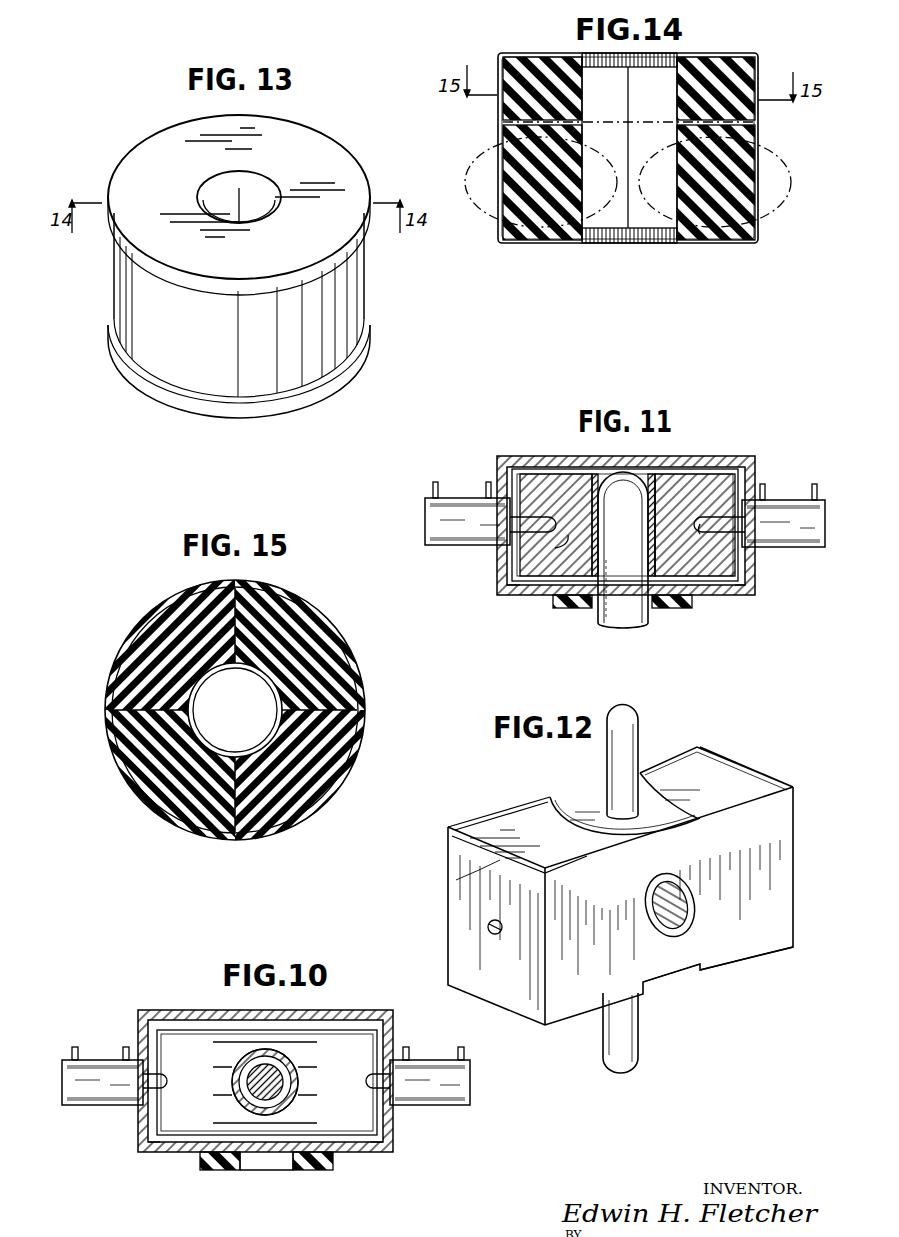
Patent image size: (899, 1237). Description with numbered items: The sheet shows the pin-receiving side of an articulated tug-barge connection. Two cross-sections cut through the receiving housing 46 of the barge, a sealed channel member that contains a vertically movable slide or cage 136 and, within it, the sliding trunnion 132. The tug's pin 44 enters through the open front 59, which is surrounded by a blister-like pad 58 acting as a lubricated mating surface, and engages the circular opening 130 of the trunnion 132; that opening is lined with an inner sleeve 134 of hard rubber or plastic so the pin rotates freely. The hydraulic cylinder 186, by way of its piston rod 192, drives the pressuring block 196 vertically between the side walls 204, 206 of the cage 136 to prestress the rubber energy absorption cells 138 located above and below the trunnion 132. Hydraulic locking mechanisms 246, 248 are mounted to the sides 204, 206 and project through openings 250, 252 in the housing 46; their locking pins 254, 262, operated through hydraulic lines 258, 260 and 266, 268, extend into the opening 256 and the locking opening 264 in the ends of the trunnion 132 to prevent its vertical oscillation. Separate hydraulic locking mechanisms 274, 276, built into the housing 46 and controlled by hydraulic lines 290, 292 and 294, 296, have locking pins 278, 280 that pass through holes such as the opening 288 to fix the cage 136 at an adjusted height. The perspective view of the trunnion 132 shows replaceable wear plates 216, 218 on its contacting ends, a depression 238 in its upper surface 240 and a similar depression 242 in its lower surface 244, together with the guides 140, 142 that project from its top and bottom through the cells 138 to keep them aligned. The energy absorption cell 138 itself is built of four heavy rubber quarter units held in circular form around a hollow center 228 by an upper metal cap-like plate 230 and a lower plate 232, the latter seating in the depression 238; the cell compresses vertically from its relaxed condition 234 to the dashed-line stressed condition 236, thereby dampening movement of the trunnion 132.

In FIG. 11, the pin 44 is at (603, 612).
In FIG. 11, the receiving housing 46 is at (725, 457).
In FIG. 10, the receiving housing 46 is at (185, 1010).
In FIG. 11, the blister-like pad 58 is at (670, 609).
In FIG. 10, the blister-like pad 58 is at (215, 1172).
In FIG. 10, the open front 59 is at (268, 1155).
In FIG. 11, the circular opening 130 is at (597, 470).
In FIG. 12, the circular opening 130 is at (688, 915).
In FIG. 11, the trunnion 132 is at (672, 478).
In FIG. 12, the trunnion 132 is at (713, 772).
In FIG. 11, the inner sleeve 134 is at (654, 509).
In FIG. 12, the inner sleeve 134 is at (655, 905).
In FIG. 11, the slide or cage 136 is at (530, 468).
In FIG. 13, the rubber energy absorption cell 138 is at (125, 297).
In FIG. 14, the rubber energy absorption cell 138 is at (503, 112).
In FIG. 15, the rubber energy absorption cell 138 is at (128, 640).
In FIG. 12, the guide 140 is at (640, 723).
In FIG. 12, the guide 142 is at (615, 1038).
In FIG. 10, the hydraulic cylinder 186 is at (277, 1057).
In FIG. 10, the piston rod 192 is at (252, 1081).
In FIG. 10, the pressuring block 196 is at (228, 1040).
In FIG. 11, the side wall 204 is at (510, 563).
In FIG. 10, the side wall 204 is at (150, 1118).
In FIG. 11, the side wall 206 is at (740, 578).
In FIG. 10, the side wall 206 is at (383, 1132).
In FIG. 12, the wear plate 216 is at (490, 846).
In FIG. 12, the wear plate 218 is at (760, 772).
In FIG. 13, the hollow center 228 is at (258, 202).
In FIG. 14, the hollow center 228 is at (677, 101).
In FIG. 15, the hollow center 228 is at (243, 752).
In FIG. 13, the upper metal cap-like plate 230 is at (165, 142).
In FIG. 14, the upper metal cap-like plate 230 is at (540, 53).
In FIG. 13, the lower metal cap-like plate 232 is at (210, 417).
In FIG. 14, the lower metal cap-like plate 232 is at (700, 243).
In FIG. 14, the relaxed condition 234 is at (750, 78).
In FIG. 14, the stressed condition 236 is at (785, 165).
In FIG. 12, the depression 238 is at (583, 800).
In FIG. 12, the upper surface 240 is at (528, 815).
In FIG. 12, the depression 242 is at (672, 978).
In FIG. 12, the lower surface 244 is at (718, 965).
In FIG. 11, the hydraulic locking mechanism 246 is at (425, 515).
In FIG. 11, the hydraulic locking mechanism 248 is at (805, 548).
In FIG. 11, the opening 250 is at (500, 546).
In FIG. 11, the opening 252 is at (745, 550).
In FIG. 11, the locking pin 254 is at (533, 518).
In FIG. 11, the opening 256 is at (554, 551).
In FIG. 12, the opening 256 is at (486, 927).
In FIG. 11, the hydraulic line 258 is at (434, 490).
In FIG. 11, the hydraulic line 260 is at (487, 490).
In FIG. 11, the locking pin 262 is at (695, 525).
In FIG. 11, the locking opening 264 is at (705, 527).
In FIG. 11, the hydraulic line 266 is at (816, 492).
In FIG. 11, the hydraulic line 268 is at (764, 492).
In FIG. 10, the hydraulic locking mechanism 274 is at (92, 1102).
In FIG. 10, the hydraulic locking mechanism 276 is at (443, 1102).
In FIG. 10, the locking pin 278 is at (165, 1080).
In FIG. 10, the locking pin 280 is at (370, 1080).
In FIG. 10, the opening 288 is at (160, 1097).
In FIG. 10, the hydraulic line 290 is at (125, 1047).
In FIG. 10, the hydraulic line 292 is at (72, 1052).
In FIG. 10, the hydraulic line 294 is at (406, 1050).
In FIG. 10, the hydraulic line 296 is at (463, 1052).